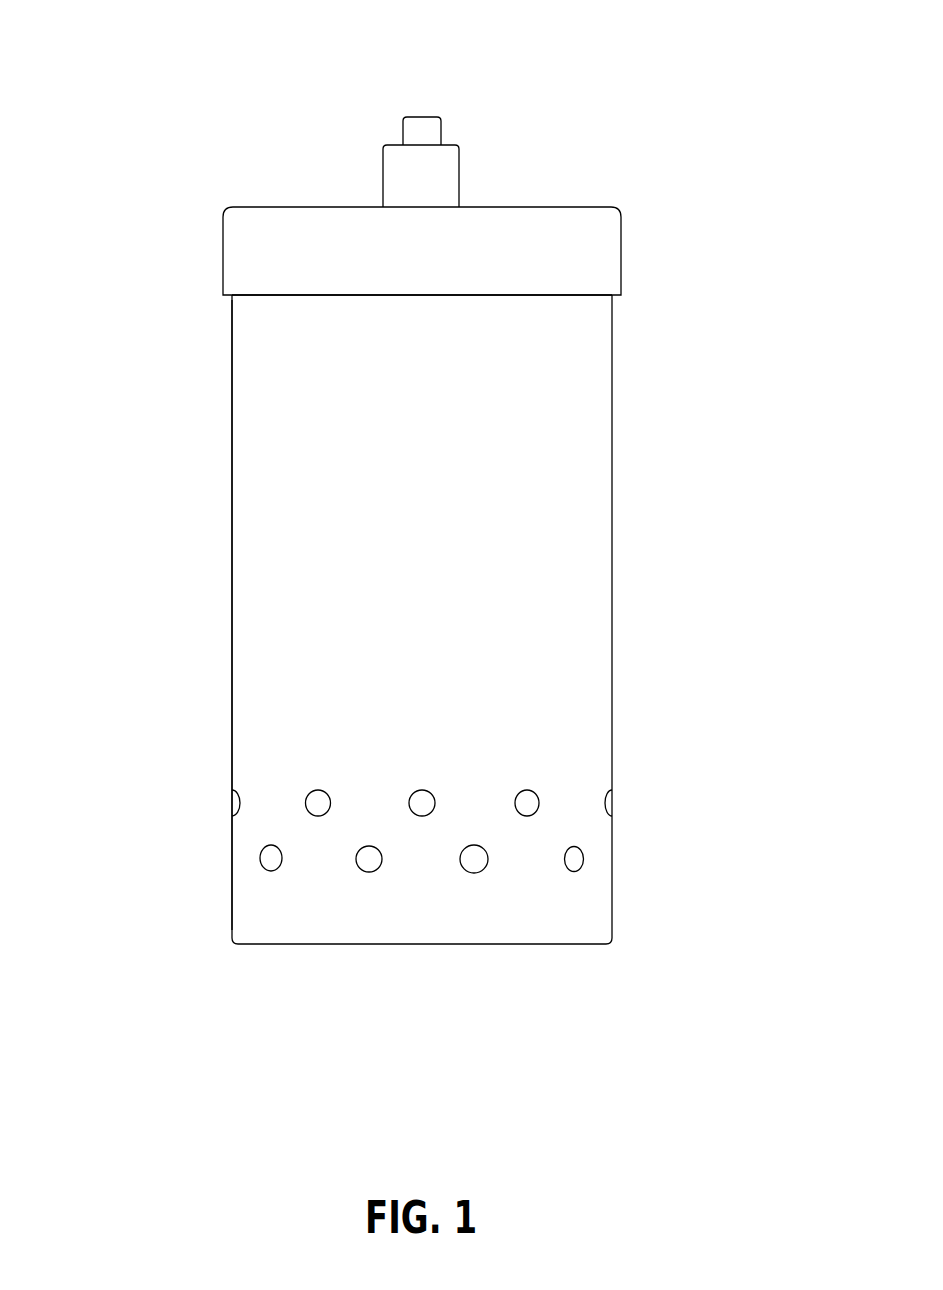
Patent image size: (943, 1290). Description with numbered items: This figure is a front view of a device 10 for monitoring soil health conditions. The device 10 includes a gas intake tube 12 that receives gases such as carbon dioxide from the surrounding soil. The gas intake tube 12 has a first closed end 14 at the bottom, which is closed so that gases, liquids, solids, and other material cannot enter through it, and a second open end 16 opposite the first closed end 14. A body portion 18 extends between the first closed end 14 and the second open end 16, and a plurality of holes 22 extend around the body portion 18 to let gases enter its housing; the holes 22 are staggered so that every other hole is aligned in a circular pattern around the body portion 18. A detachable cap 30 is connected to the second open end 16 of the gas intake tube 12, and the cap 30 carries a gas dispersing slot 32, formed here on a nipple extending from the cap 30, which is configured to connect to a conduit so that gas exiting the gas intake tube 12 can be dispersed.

The device for monitoring soil health conditions 10 is at (733, 243).
The gas intake tube 12 is at (615, 412).
The first closed end 14 is at (339, 945).
The second open end 16 is at (242, 308).
The body portion 18 is at (275, 587).
The holes 22 is at (474, 865).
The detachable cap 30 is at (253, 248).
The gas dispersing slot 32 is at (403, 160).